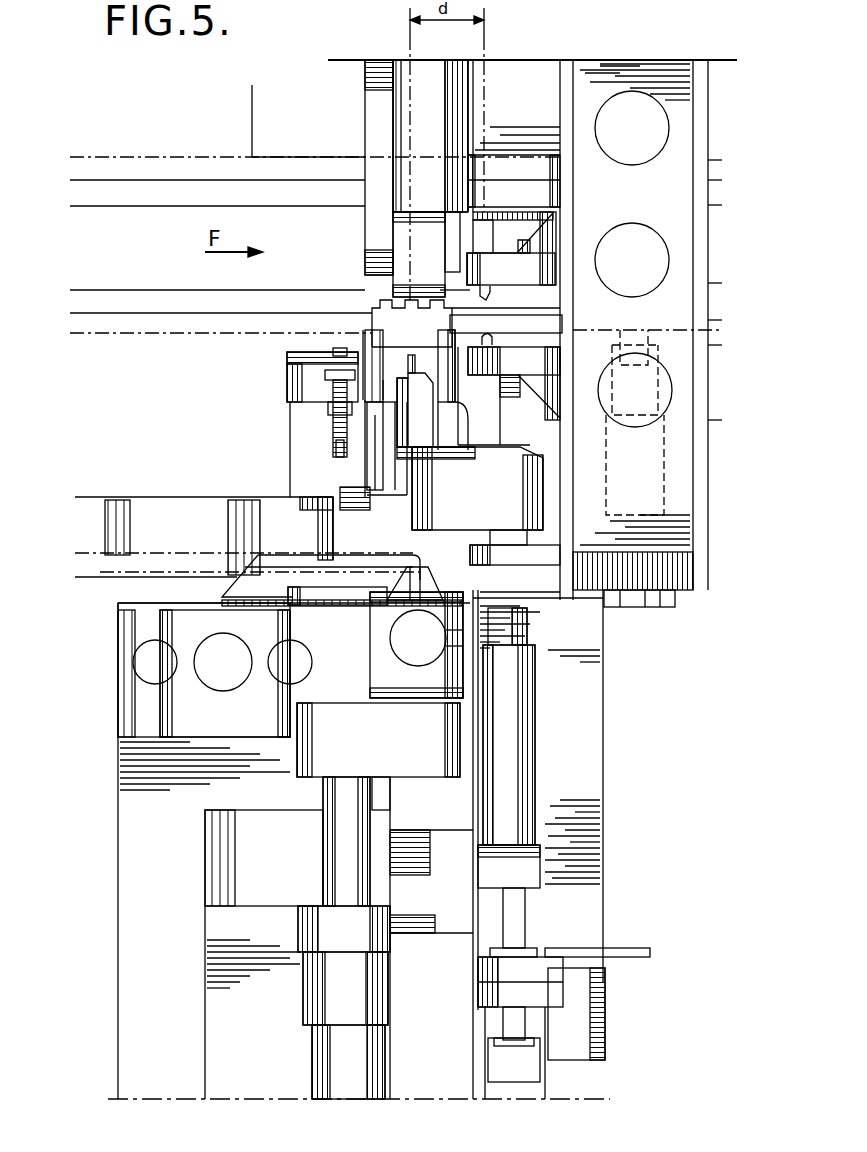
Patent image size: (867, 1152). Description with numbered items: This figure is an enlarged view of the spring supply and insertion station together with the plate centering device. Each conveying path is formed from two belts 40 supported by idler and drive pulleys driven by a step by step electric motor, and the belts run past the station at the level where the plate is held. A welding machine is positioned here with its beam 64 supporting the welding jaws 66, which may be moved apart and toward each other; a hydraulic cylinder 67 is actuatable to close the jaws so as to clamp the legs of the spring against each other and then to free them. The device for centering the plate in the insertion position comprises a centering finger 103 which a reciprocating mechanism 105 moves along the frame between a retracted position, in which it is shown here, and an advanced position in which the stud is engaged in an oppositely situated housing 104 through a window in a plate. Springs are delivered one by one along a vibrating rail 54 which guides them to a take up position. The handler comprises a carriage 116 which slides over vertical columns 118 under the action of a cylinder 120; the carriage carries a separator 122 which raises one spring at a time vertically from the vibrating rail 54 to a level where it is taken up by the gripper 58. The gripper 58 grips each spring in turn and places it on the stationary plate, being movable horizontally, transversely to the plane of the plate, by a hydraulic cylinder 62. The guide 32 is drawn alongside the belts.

The guide rail 32 is at (150, 157).
The belts 40 is at (147, 195).
The vibrating rail 54 is at (192, 553).
The gripper 58 is at (427, 582).
The hydraulic cylinder 62 is at (340, 1075).
The beam 64 is at (677, 115).
The welding jaws 66 is at (473, 270).
The hydraulic cylinder 67 is at (660, 505).
The centering finger 103 is at (363, 365).
The housing 104 is at (400, 300).
The reciprocating mechanism 105 is at (517, 802).
The carriage 116 is at (205, 722).
The vertical columns 118 is at (285, 650).
The cylinder 120 is at (218, 676).
The separator 122 is at (330, 562).